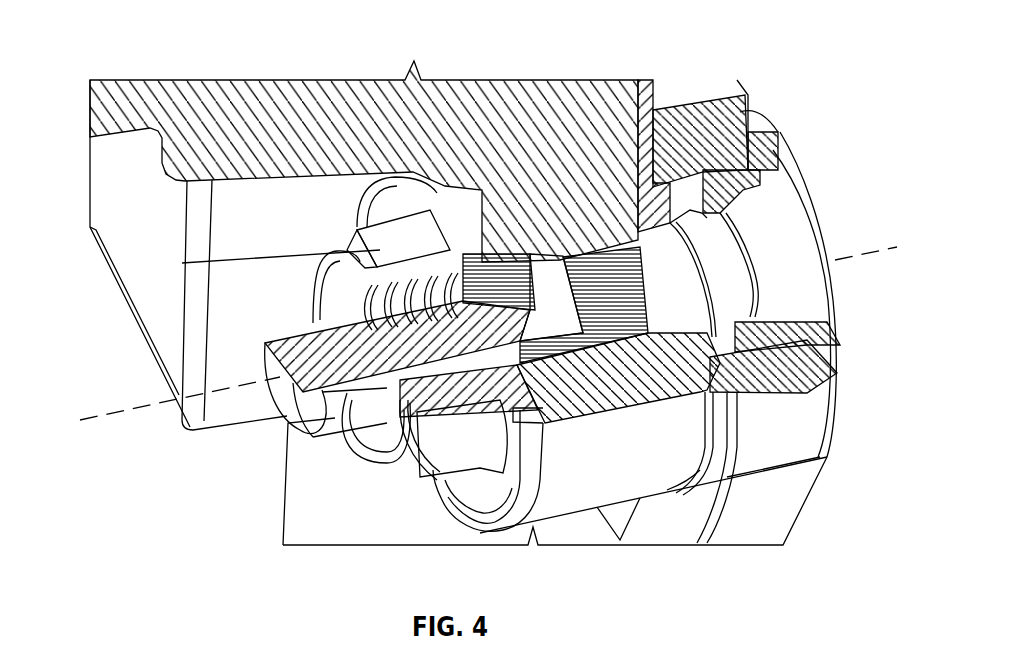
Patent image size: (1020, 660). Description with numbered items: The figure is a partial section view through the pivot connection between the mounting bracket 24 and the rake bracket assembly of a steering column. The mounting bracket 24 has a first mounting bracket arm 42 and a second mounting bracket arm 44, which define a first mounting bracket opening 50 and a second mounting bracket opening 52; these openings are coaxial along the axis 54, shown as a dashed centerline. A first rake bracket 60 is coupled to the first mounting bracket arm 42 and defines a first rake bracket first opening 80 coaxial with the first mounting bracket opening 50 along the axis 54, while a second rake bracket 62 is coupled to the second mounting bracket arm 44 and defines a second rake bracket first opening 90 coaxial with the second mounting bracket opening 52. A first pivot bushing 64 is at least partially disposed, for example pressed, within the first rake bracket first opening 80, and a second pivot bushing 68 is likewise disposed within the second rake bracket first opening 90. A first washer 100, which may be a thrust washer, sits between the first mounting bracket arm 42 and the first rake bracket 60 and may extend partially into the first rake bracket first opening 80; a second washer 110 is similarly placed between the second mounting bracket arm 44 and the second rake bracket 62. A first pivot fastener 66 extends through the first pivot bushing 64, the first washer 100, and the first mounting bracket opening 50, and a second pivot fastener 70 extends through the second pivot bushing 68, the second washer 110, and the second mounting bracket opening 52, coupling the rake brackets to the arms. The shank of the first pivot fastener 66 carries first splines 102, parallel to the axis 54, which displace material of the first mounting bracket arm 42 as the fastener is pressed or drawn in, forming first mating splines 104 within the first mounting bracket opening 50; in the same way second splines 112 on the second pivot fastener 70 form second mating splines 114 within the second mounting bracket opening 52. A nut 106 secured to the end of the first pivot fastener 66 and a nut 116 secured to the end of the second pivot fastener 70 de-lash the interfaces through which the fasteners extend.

The mounting bracket 24 is at (419, 217).
The first mounting bracket arm 42 is at (419, 217).
The second mounting bracket arm 44 is at (204, 74).
The first mounting bracket opening 50 is at (489, 163).
The second mounting bracket opening 52 is at (500, 258).
The axis 54 is at (847, 253).
The first rake bracket 60 is at (582, 482).
The second rake bracket 62 is at (772, 508).
The first pivot bushing 64 is at (811, 214).
The second pivot bushing 68 is at (757, 317).
The first pivot fastener 66 is at (761, 264).
The second pivot fastener 70 is at (777, 207).
The first rake bracket first opening 80 is at (716, 130).
The second rake bracket first opening 90 is at (703, 172).
The first washer 100 is at (678, 494).
The second washer 110 is at (707, 477).
The first splines 102 is at (596, 236).
The second splines 112 is at (597, 277).
The first mating splines 104 is at (473, 179).
The second mating splines 114 is at (470, 240).
The nut 106 is at (404, 416).
The nut 116 is at (422, 468).